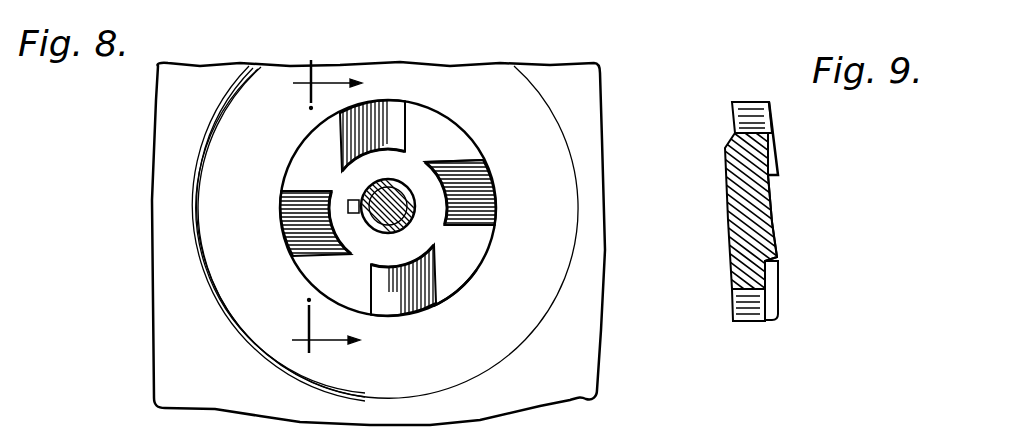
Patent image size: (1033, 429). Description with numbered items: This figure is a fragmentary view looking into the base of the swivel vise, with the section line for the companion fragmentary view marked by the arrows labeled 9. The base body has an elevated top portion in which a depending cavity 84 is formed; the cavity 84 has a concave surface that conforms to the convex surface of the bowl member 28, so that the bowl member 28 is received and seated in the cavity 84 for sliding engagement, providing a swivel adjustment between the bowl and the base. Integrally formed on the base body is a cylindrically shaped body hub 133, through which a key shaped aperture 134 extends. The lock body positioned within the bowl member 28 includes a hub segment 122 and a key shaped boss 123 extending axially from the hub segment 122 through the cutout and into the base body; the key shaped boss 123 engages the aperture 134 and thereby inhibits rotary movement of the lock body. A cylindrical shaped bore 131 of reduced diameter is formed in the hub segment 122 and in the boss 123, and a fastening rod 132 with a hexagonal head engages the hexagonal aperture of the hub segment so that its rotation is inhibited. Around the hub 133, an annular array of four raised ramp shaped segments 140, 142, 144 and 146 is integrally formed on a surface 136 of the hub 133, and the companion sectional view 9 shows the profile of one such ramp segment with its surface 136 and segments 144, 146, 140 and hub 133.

In FIG. 8, the bowl member 28 is at (596, 367).
In FIG. 8, the cavity 84 is at (548, 143).
In FIG. 8, the surface 136 is at (312, 141).
In FIG. 9, the surface 136 is at (777, 193).
In FIG. 8, the ramp shaped segment 144 is at (393, 104).
In FIG. 9, the ramp shaped segment 144 is at (780, 165).
In FIG. 8, the ramp shaped segment 142 is at (480, 195).
In FIG. 8, the ramp shaped segment 140 is at (398, 306).
In FIG. 9, the ramp shaped segment 140 is at (778, 289).
In FIG. 8, the ramp shaped segment 146 is at (293, 212).
In FIG. 9, the ramp shaped segment 146 is at (777, 229).
In FIG. 8, the key shaped aperture 134 is at (397, 180).
In FIG. 8, the cylindrical shaped bore 131 is at (377, 232).
In FIG. 8, the rod 132 is at (410, 228).
In FIG. 8, the key shaped boss 123 is at (353, 198).
In FIG. 8, the hub segment 122 is at (427, 158).
In FIG. 8, the body hub 133 is at (462, 272).
In FIG. 9, the body hub 133 is at (754, 322).
In FIG. 8, the section line 9- 9 is at (337, 208).